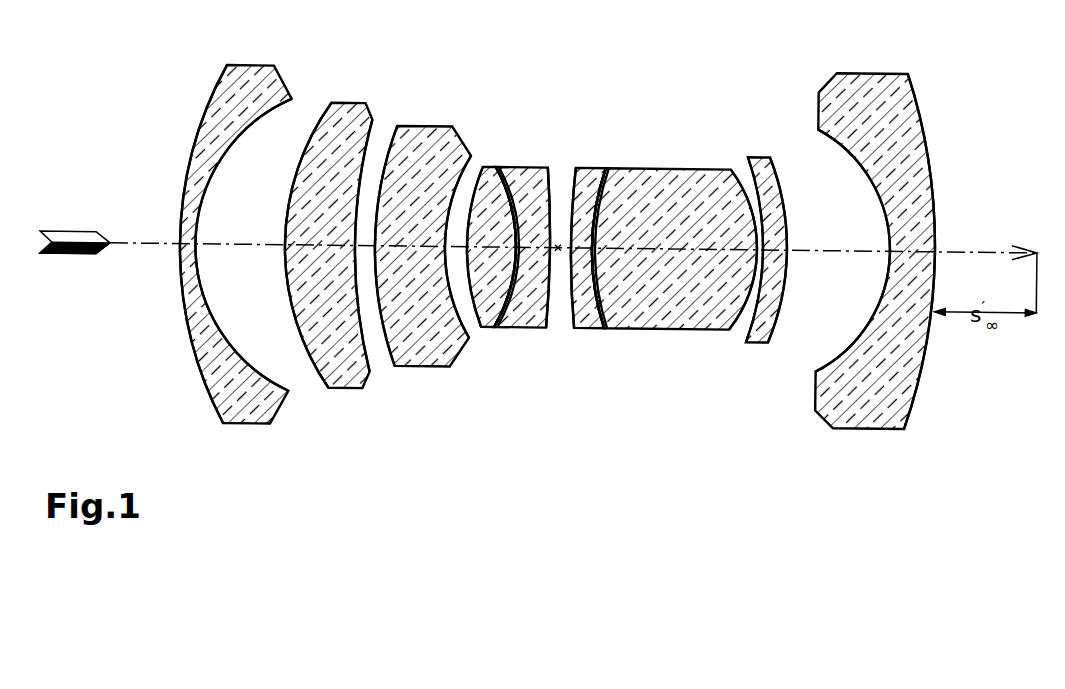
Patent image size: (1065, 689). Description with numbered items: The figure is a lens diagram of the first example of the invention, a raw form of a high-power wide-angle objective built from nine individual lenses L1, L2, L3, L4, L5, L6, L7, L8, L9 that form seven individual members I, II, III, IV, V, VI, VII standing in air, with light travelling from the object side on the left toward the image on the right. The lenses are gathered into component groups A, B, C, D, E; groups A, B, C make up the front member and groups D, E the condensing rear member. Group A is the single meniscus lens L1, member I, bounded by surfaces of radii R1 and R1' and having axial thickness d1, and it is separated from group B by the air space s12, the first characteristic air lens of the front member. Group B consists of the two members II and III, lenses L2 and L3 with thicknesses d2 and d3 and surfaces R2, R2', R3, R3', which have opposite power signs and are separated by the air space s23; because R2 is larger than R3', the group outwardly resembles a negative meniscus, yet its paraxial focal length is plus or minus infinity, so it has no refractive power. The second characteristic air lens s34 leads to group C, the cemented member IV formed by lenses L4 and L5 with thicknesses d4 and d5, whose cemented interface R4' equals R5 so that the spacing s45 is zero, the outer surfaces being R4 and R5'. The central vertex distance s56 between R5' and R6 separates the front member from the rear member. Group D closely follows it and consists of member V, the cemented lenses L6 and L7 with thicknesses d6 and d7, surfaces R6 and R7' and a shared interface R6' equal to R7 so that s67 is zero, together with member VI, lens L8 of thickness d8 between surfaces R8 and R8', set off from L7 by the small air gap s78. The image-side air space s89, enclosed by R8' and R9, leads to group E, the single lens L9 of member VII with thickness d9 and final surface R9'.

The first lens L1 is at (227, 271).
The second lens L2 is at (337, 266).
The third lens L3 is at (432, 284).
The fourth lens L4 is at (505, 274).
The fifth lens L5 is at (545, 281).
The sixth lens L6 is at (617, 287).
The seventh lens L7 is at (674, 283).
The eighth lens L8 is at (771, 294).
The ninth lens L9 is at (899, 283).
The radius of curvature of front surface of first lens R1 is at (195, 238).
The radius of curvature of rear surface of first lens R1' is at (243, 244).
The radius of curvature of front surface of second lens R2 is at (307, 215).
The radius of curvature of rear surface of second lens R2' is at (373, 209).
The radius of curvature of front surface of third lens R3 is at (404, 223).
The radius of curvature of rear surface of third lens R3' is at (467, 212).
The radius of curvature of front surface of fourth lens R4 is at (491, 193).
The radius of curvature of rear surface of fourth lens R4' is at (519, 216).
The radius of curvature of front surface of fifth lens R5 is at (537, 200).
The radius of curvature of rear surface of fifth lens R5' is at (571, 220).
The radius of curvature of front surface of sixth lens R6 is at (603, 204).
The radius of curvature of rear surface of sixth lens R6' is at (623, 222).
The radius of curvature of front surface of seventh lens R7 is at (641, 214).
The radius of curvature of rear surface of seventh lens R7' is at (727, 201).
The radius of curvature of front surface of eighth lens R8 is at (751, 218).
The radius of curvature of rear surface of eighth lens R8' is at (786, 227).
The radius of curvature of front surface of ninth lens R9 is at (849, 251).
The radius of curvature of rear surface of ninth lens R9' is at (947, 251).
The thickness of first lens d1 is at (182, 232).
The thickness of second lens d2 is at (319, 245).
The thickness of third lens d3 is at (407, 248).
The thickness of fourth lens d4 is at (490, 248).
The thickness of fifth lens d5 is at (534, 250).
The thickness of sixth lens d6 is at (560, 220).
The thickness of seventh lens d7 is at (672, 252).
The thickness of eighth lens d8 is at (814, 225).
The thickness of ninth lens d9 is at (910, 253).
The air space between first and second lenses s12 is at (248, 244).
The air space between second and third lenses s23 is at (370, 373).
The air space between third and fourth lenses s34 is at (470, 346).
The vertex distance between fourth and fifth lenses s45 is at (517, 329).
The central vertex distance s56 is at (571, 330).
The vertex distance between sixth and seventh lenses s67 is at (661, 330).
The air space between seventh and eighth lenses s78 is at (743, 344).
The image-side air space s89 is at (833, 253).
The first lens member I is at (252, 490).
The second lens member II is at (337, 490).
The third lens member III is at (416, 536).
The fourth lens member IV is at (548, 497).
The fifth lens member V is at (697, 495).
The sixth lens member VI is at (756, 495).
The seventh lens member VII is at (873, 497).
The first component group A is at (250, 552).
The second component group B is at (412, 550).
The third component group C is at (525, 552).
The fourth component group D is at (752, 553).
The fifth component group E is at (872, 555).